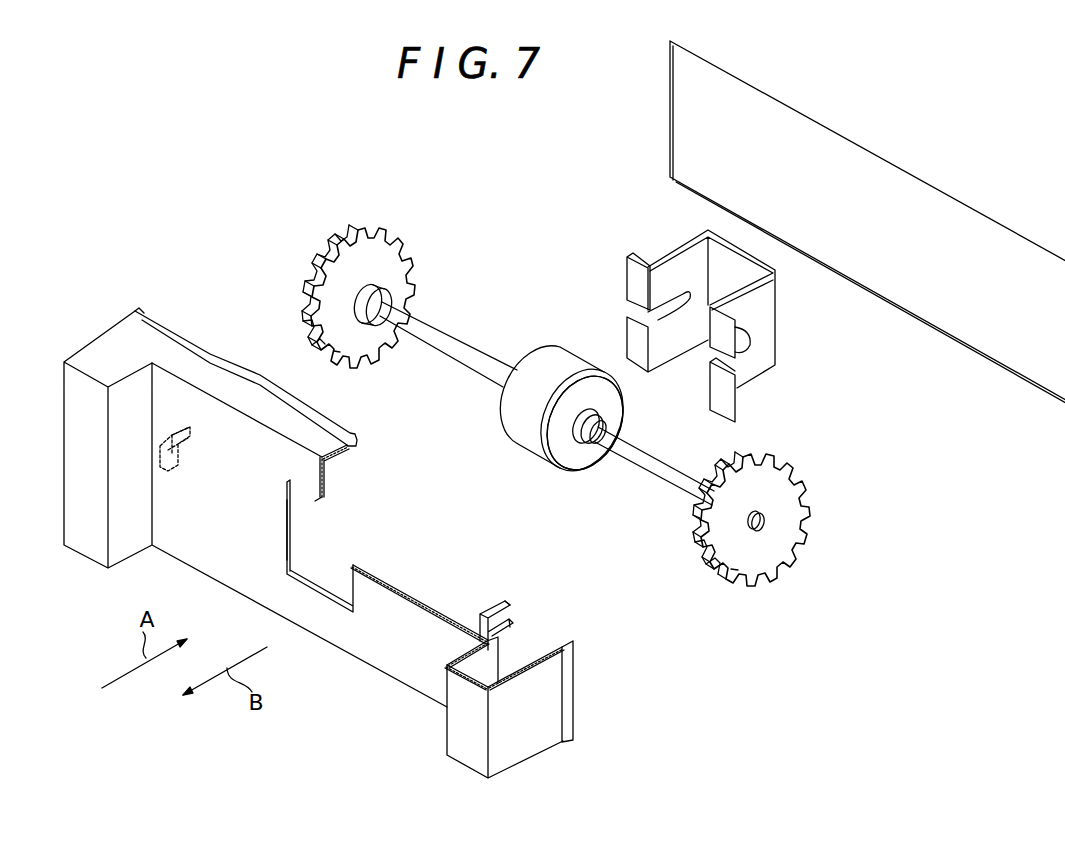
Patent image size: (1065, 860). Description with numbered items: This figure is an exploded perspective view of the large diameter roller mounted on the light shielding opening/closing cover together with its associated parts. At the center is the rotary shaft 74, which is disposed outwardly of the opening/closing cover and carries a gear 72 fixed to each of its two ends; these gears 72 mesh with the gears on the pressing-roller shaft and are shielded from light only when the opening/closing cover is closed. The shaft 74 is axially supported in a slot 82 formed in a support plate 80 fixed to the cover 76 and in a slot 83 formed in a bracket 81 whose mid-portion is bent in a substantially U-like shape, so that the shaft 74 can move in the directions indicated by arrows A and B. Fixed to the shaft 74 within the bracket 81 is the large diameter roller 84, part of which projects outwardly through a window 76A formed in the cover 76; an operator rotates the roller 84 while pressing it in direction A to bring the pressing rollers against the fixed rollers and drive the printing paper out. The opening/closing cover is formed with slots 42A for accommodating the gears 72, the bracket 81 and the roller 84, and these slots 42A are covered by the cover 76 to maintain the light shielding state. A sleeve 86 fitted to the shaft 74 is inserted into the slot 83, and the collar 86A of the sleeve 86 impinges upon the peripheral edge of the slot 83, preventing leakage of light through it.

The slot 42A is at (931, 312).
The gear 72 is at (385, 243).
The rotary shaft 74 is at (447, 352).
The cover 76 is at (242, 588).
The window 76A is at (318, 582).
The support plate 80 is at (188, 460).
The bracket 81 is at (748, 252).
The slot 82 is at (190, 432).
The slot 83 is at (660, 315).
The large diameter roller 84 is at (523, 448).
The sleeve 86 is at (610, 421).
The collar 86A is at (568, 440).